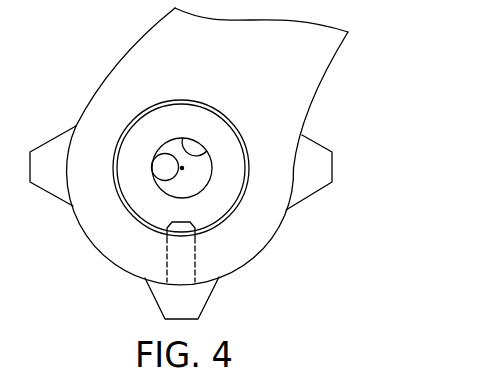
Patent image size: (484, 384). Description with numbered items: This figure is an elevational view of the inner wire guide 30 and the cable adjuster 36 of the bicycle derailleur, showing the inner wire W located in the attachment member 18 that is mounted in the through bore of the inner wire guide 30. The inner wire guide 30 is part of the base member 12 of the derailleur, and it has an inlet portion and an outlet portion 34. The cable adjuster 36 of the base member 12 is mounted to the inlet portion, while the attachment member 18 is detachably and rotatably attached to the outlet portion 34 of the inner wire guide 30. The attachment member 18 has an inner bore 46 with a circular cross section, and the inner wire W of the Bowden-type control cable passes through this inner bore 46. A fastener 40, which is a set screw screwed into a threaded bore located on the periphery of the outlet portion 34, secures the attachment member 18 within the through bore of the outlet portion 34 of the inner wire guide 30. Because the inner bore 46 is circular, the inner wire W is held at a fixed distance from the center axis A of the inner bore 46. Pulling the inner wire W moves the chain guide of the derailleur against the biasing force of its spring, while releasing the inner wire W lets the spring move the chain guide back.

The base member 12 is at (326, 77).
The attachment member 18 is at (231, 220).
The inner wire guide 30 is at (252, 268).
The outlet portion 34 is at (113, 108).
The cable adjuster 36 is at (338, 157).
The fastener 40 is at (165, 252).
The inner bore 46 is at (184, 139).
The inner wire W is at (162, 181).
The center axis A is at (182, 168).